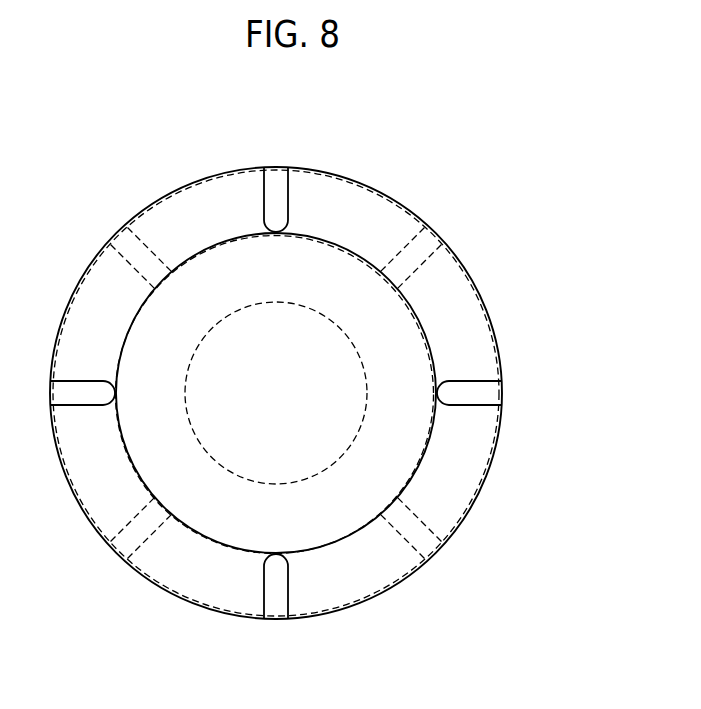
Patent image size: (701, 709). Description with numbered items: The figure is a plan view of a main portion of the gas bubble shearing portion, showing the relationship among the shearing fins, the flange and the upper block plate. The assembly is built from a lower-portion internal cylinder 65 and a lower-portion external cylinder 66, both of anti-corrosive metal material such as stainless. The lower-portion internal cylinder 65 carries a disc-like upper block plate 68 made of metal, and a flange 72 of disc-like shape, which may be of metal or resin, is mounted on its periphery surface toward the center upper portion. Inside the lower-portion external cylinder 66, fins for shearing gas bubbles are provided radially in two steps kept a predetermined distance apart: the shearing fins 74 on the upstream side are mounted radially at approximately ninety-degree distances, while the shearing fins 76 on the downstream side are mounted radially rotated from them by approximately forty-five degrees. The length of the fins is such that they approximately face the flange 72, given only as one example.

The lower-portion internal cylinder 65 is at (301, 300).
The lower-portion external cylinder 66 is at (498, 448).
The upper block plate 68 is at (286, 335).
The flange 72 is at (342, 247).
The shearing fins on the upstream side 74 is at (286, 197).
The shearing fins on the downstream side 76 is at (420, 268).